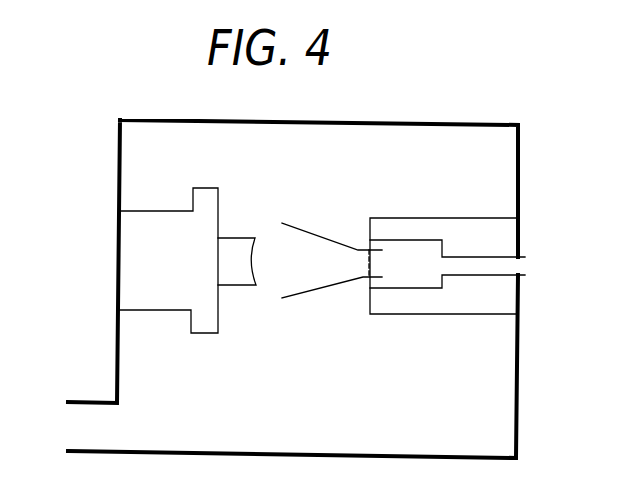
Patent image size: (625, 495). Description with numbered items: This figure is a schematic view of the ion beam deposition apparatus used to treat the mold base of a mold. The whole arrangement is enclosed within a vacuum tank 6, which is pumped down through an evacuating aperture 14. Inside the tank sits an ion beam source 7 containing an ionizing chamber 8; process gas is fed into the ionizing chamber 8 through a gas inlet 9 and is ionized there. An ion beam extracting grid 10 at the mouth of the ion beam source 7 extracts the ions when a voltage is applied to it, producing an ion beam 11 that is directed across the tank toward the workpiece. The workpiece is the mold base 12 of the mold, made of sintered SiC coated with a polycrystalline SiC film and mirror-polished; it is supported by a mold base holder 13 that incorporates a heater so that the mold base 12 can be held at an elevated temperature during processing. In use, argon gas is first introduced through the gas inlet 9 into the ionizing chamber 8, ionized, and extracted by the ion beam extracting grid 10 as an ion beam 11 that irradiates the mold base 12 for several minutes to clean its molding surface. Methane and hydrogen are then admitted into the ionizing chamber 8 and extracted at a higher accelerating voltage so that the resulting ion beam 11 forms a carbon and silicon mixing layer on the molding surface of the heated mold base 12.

The vacuum tank 6 is at (448, 123).
The ion beam source 7 is at (432, 316).
The ionizing chamber 8 is at (413, 252).
The gas inlet 9 is at (530, 269).
The ion beam extracting grid 10 is at (362, 270).
The ion beam 11 is at (311, 241).
The mold base 12 is at (237, 240).
The mold base holder 13 is at (207, 187).
The evacuating aperture 14 is at (97, 427).